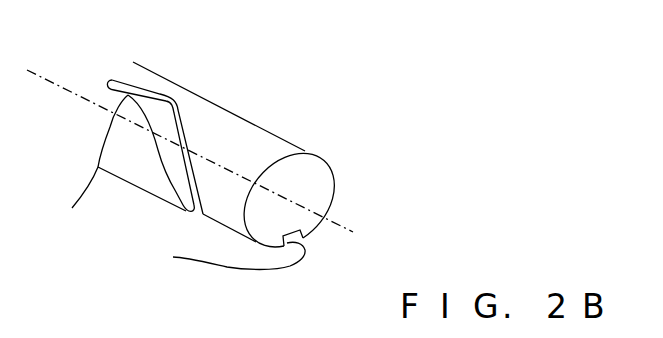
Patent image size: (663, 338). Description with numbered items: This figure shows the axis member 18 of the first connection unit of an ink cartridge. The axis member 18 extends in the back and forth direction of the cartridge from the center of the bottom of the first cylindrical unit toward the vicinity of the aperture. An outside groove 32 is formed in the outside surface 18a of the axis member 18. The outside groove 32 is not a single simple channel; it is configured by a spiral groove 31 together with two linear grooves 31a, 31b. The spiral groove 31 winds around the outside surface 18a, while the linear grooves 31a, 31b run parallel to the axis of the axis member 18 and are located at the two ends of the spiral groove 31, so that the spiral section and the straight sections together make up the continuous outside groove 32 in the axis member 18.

The axis member 18 is at (233, 135).
The outside surface 18a is at (212, 130).
The spiral groove 31 is at (173, 185).
The linear groove 31a is at (117, 163).
The linear groove 31b is at (209, 247).
The outside groove 32 is at (173, 193).